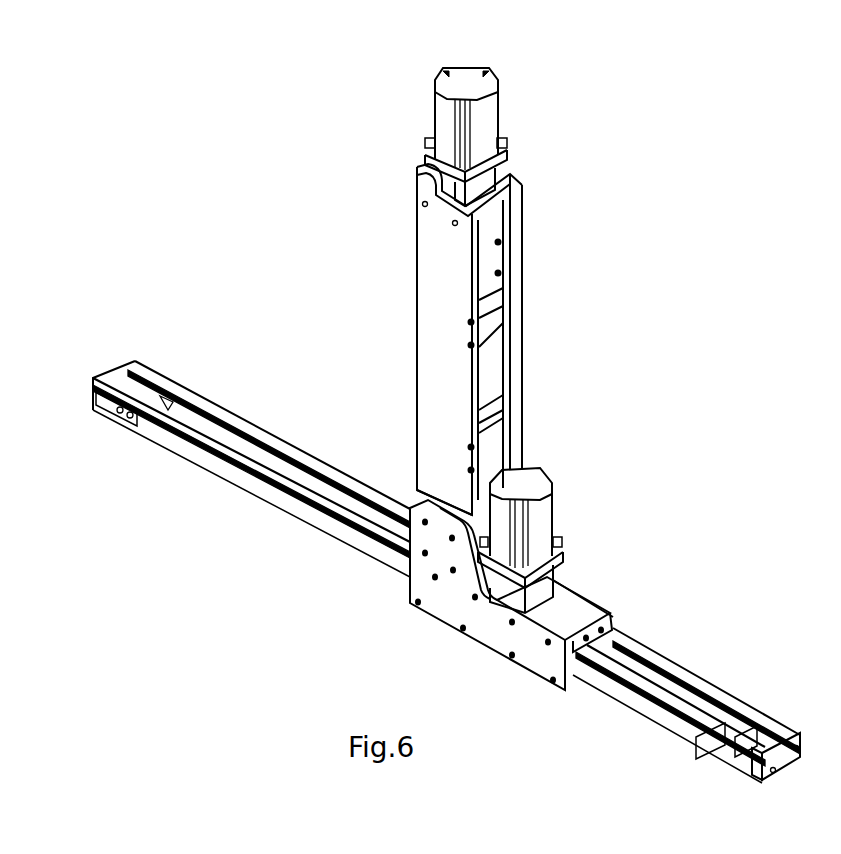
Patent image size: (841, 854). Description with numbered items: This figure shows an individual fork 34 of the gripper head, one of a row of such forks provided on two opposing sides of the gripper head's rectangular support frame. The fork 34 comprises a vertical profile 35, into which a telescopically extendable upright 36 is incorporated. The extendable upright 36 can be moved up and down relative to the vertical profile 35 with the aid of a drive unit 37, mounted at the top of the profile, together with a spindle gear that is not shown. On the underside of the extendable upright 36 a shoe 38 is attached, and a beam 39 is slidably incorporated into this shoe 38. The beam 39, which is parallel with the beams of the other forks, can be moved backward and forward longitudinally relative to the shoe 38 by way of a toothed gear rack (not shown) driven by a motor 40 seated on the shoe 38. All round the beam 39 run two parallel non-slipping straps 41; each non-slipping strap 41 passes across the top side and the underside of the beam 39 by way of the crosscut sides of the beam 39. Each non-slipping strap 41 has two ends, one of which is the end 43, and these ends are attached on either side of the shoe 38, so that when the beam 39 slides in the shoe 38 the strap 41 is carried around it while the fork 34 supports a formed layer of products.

The fork 34 is at (692, 275).
The vertical profile 35 is at (516, 243).
The telescopically extendable upright 36 is at (495, 372).
The drive unit 37 is at (490, 120).
The shoe 38 is at (433, 607).
The beam 39 is at (225, 463).
The motor 40 is at (527, 483).
The non-slipping strap 41 is at (230, 424).
The end of non-slipping strap 43 is at (628, 628).